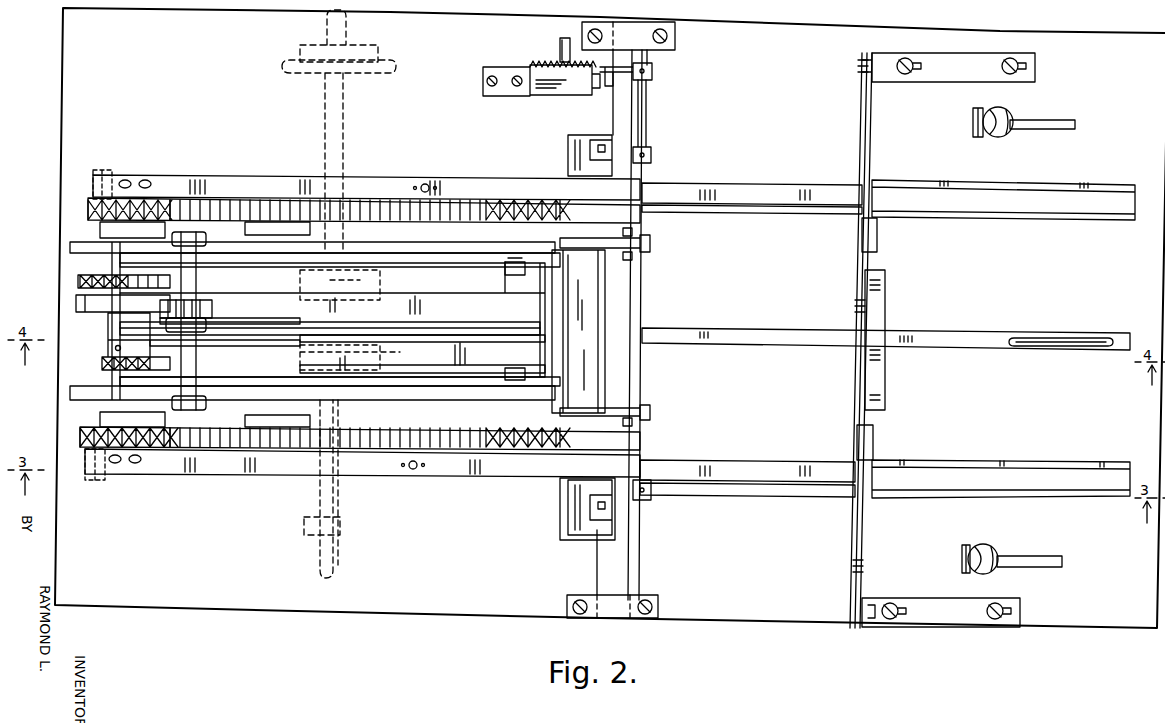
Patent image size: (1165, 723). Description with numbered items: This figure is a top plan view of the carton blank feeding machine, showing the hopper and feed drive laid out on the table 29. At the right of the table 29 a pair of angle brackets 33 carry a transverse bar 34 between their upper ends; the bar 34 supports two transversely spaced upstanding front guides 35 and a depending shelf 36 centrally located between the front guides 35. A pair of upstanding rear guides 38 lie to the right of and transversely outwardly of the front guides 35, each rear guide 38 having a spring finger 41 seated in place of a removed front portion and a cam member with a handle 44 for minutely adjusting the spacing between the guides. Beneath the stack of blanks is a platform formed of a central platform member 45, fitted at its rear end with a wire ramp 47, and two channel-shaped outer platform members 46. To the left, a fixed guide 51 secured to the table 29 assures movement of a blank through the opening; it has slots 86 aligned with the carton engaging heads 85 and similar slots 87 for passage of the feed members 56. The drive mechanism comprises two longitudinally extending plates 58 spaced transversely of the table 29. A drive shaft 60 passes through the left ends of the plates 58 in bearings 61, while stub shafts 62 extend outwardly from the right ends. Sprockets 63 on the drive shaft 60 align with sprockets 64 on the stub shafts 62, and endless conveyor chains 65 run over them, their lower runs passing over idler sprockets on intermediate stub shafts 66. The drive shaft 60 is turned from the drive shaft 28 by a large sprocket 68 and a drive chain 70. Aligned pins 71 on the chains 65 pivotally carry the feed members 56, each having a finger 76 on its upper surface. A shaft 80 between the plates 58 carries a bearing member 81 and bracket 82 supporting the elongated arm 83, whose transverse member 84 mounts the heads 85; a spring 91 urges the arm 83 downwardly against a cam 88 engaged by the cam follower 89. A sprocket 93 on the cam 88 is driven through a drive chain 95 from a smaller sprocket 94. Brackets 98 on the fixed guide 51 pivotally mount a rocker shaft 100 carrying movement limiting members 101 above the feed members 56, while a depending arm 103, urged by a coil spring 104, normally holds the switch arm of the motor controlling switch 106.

The drive shaft 28 is at (316, 487).
The table 29 is at (822, 614).
The angle brackets 33 is at (960, 78).
The transverse bar 34 is at (858, 530).
The front guides 35 is at (878, 238).
The depending shelf 36 is at (888, 305).
The rear guides 38 is at (1008, 112).
The spring finger 41 is at (972, 124).
The handle 44 is at (1060, 130).
The central platform member 45 is at (940, 336).
The outer platform members 46 is at (990, 178).
The wire ramp 47 is at (1060, 337).
The fixed guide 51 is at (560, 518).
The feed member 56 is at (382, 178).
The plates 58 is at (420, 260).
The drive shaft 60 is at (110, 330).
The bearings 61 is at (75, 243).
The stub shafts 62 is at (512, 276).
The sprockets 63 is at (88, 210).
The sprockets 64 is at (500, 205).
The endless conveyor chains 65 is at (228, 208).
The intermediate stub shaft 66 is at (300, 262).
The large sprocket 68 is at (378, 354).
The drive chain 70 is at (258, 348).
The pins 71 is at (105, 170).
The finger 76 is at (428, 185).
The shaft 80 is at (195, 262).
The bearing member 81 is at (196, 385).
The bracket 82 is at (300, 327).
The elongated arm 83 is at (465, 335).
The transverse member 84 is at (542, 357).
The carton engaging heads 85 is at (652, 244).
The slots 86 is at (612, 258).
The slots 87 is at (568, 188).
The cam 88 is at (78, 303).
The cam follower 89 is at (206, 320).
The spring 91 is at (418, 325).
The sprocket 93 is at (80, 280).
The smaller sprocket 94 is at (355, 268).
The drive chain 95 is at (212, 310).
The brackets 98 is at (630, 148).
The rocker shaft 100 is at (642, 310).
The movement limiting members 101 is at (735, 185).
The depending arm 103 is at (650, 75).
The coil spring 104 is at (555, 55).
The motor controlling switch 106 is at (562, 92).